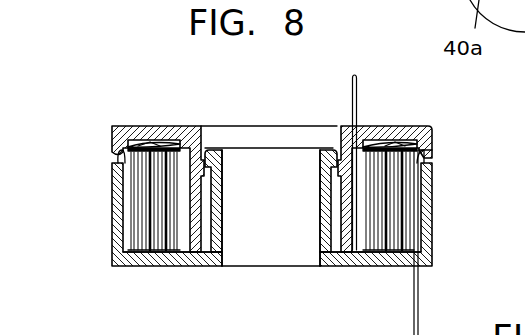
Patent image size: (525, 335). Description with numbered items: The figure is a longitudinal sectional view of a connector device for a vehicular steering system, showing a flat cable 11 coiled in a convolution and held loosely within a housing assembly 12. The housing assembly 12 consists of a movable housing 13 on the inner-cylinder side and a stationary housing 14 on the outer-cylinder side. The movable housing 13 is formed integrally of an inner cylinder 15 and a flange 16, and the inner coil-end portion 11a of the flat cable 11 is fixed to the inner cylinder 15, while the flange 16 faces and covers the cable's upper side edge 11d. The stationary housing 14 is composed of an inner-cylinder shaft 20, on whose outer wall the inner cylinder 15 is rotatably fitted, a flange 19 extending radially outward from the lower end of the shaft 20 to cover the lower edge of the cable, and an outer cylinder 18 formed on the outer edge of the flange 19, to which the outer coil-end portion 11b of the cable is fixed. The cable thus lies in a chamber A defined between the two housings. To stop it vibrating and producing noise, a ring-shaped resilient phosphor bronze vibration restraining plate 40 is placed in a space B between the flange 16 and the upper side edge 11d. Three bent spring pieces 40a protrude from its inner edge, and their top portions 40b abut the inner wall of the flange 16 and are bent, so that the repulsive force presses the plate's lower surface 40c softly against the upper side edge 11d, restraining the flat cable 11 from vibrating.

The flat cable 11 is at (397, 185).
The inner coil-end portion 11a is at (358, 88).
The outer coil-end portion 11b is at (414, 306).
The upper side edge 11d is at (150, 167).
The housing assembly 12 is at (483, 113).
The movable housing 13 is at (433, 131).
The stationary housing 14 is at (433, 168).
The inner cylinder 15 is at (197, 193).
The flange 16 is at (116, 165).
The outer cylinder 18 is at (112, 210).
The flange 19 is at (171, 268).
The inner-cylinder shaft 20 is at (220, 221).
The vibration restraining plate 40 is at (313, 168).
The bent spring pieces 40a is at (378, 143).
The top portions 40b is at (148, 140).
The lower surface 40c is at (125, 168).
The chamber A is at (157, 255).
The space B is at (126, 135).